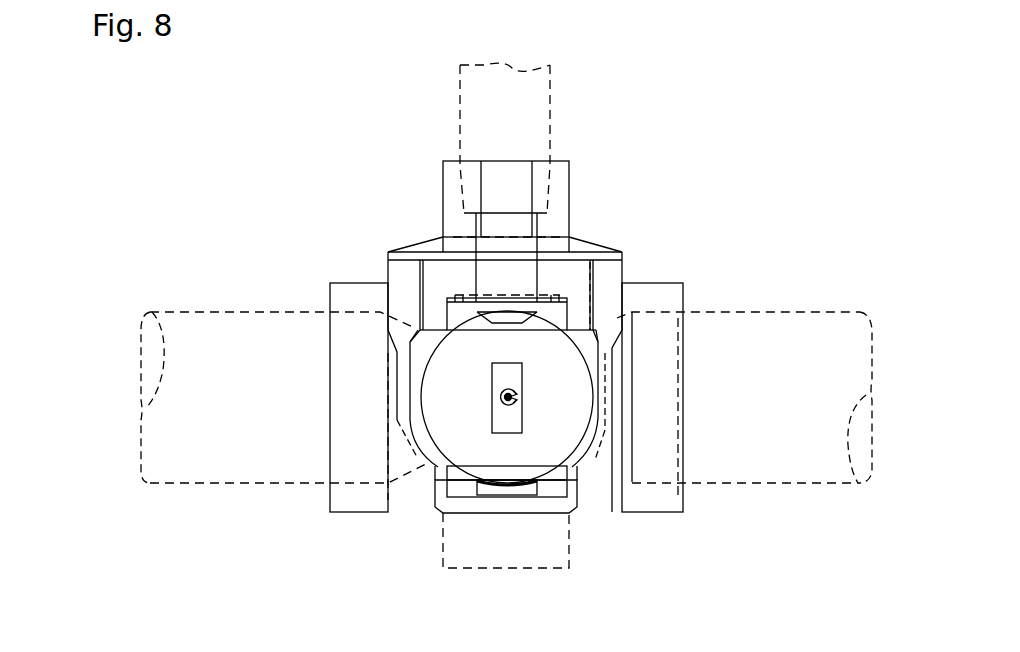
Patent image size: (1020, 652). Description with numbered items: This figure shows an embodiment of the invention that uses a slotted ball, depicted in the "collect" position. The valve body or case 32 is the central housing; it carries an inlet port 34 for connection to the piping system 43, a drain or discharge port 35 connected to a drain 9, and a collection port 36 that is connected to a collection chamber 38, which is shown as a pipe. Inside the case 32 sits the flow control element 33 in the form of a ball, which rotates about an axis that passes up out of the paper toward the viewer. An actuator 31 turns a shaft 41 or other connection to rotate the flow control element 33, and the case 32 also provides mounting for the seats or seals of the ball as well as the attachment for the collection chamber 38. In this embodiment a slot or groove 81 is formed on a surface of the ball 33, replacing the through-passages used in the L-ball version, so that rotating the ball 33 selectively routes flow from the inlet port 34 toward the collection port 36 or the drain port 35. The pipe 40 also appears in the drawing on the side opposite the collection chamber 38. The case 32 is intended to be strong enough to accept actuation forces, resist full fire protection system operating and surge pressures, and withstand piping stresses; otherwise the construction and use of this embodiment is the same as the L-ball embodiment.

The drain 9 is at (537, 558).
The actuator 31 is at (493, 363).
The valve body or case 32 is at (387, 283).
The flow control element 33 is at (492, 337).
The inlet port 34 is at (533, 296).
The drain or discharge port 35 is at (478, 495).
The collection port 36 is at (598, 420).
The collection chamber 38 is at (773, 413).
The inlet pipe 40 is at (242, 413).
The shaft 41 is at (506, 400).
The piping system 43 is at (505, 138).
The slot or groove 81 is at (570, 348).